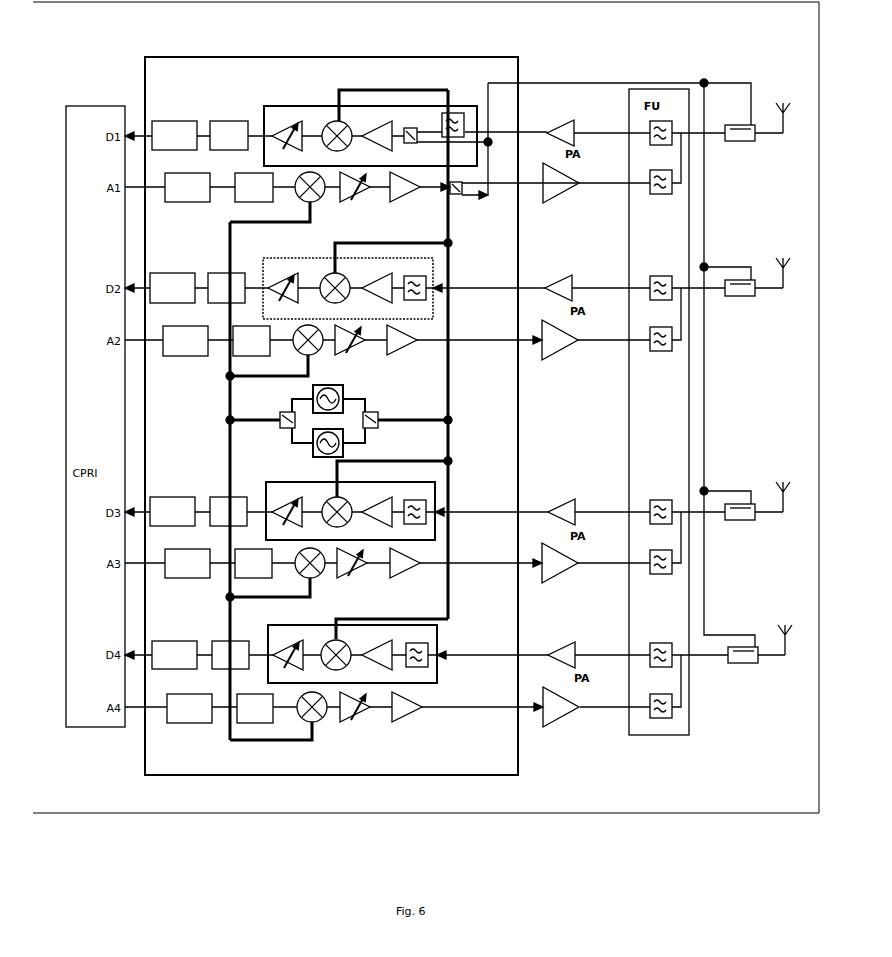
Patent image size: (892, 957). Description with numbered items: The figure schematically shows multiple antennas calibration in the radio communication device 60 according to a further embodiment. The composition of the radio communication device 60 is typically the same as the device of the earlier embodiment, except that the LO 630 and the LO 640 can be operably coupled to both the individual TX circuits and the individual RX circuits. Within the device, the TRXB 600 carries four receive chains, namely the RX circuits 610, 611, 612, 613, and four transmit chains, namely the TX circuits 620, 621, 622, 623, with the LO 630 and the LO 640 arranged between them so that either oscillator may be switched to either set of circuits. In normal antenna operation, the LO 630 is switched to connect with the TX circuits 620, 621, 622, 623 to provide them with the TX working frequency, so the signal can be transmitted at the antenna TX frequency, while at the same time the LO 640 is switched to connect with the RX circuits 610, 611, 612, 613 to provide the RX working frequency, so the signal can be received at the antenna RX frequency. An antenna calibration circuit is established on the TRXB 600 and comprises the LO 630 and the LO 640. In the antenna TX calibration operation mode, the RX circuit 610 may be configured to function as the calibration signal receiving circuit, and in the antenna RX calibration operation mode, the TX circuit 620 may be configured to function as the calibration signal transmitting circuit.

The radio communication device 60 is at (426, 407).
The TRXB 600 is at (336, 416).
The RX circuit 610 is at (336, 136).
The RX circuit 611 is at (283, 288).
The RX circuit 612 is at (284, 509).
The RX circuit 613 is at (285, 651).
The TX circuit 620 is at (334, 195).
The TX circuit 621 is at (329, 351).
The TX circuit 622 is at (329, 571).
The TX circuit 623 is at (329, 718).
The LO 630 is at (351, 396).
The LO 640 is at (309, 445).